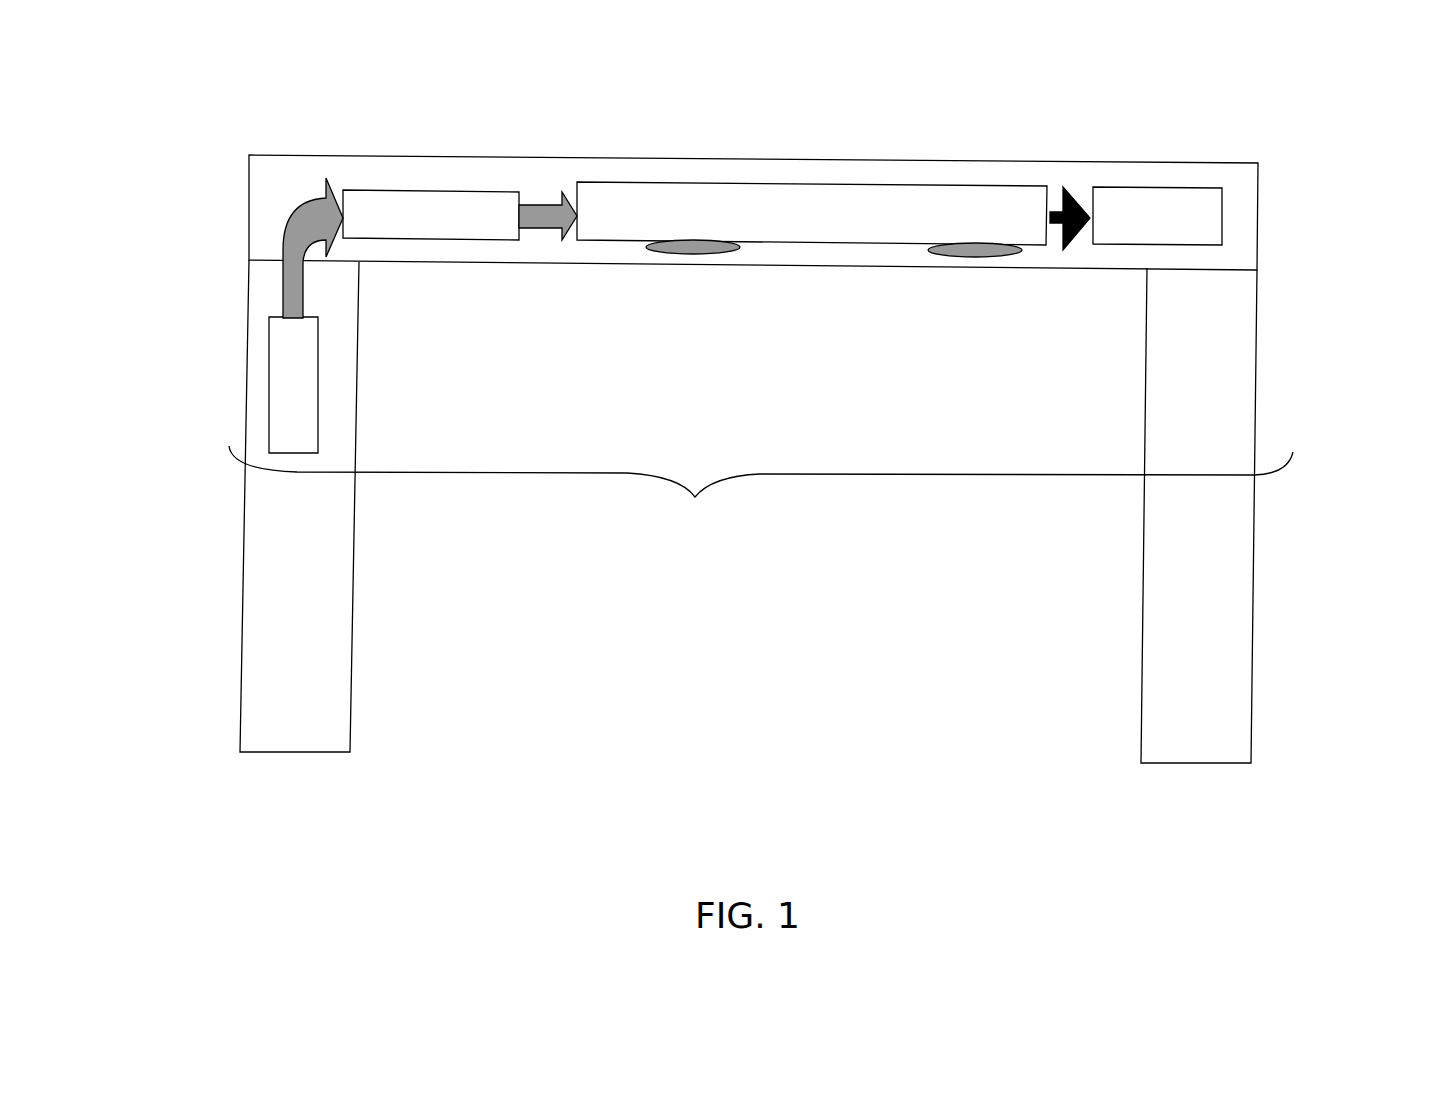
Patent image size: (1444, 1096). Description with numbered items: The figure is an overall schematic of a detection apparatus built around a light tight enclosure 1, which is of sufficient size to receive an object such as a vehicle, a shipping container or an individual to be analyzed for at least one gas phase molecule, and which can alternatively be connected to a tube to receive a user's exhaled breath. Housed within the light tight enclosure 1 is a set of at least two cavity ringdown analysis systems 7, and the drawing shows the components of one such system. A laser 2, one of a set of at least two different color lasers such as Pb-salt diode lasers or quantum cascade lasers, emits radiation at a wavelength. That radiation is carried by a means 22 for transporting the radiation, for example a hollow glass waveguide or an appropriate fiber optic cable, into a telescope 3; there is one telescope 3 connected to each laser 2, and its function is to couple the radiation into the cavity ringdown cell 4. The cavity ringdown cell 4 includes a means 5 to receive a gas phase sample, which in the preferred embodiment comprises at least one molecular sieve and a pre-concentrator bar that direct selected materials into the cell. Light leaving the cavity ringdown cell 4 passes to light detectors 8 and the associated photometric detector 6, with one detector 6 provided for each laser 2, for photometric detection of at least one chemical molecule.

The light tight enclosure 1 is at (251, 506).
The laser 2 is at (312, 373).
The telescope 3 is at (415, 197).
The cavity ringdown cell 4 is at (762, 177).
The means to receive a gas phase sample 5 is at (681, 255).
The photometric detector 6 is at (1152, 180).
The cavity ringdown analysis system 7 is at (761, 351).
The light detector 8 is at (1090, 180).
The means for transporting the radiation 22 is at (273, 234).